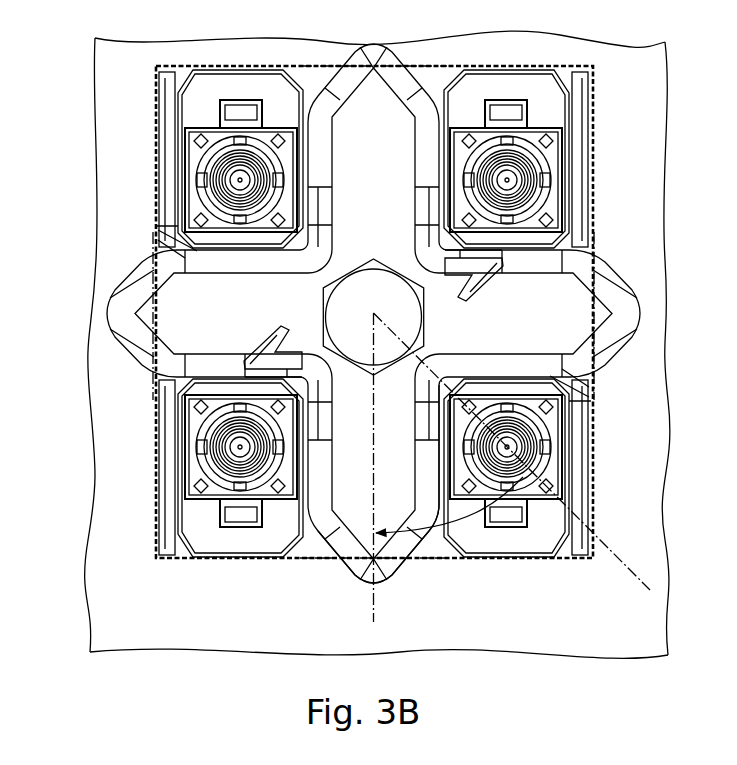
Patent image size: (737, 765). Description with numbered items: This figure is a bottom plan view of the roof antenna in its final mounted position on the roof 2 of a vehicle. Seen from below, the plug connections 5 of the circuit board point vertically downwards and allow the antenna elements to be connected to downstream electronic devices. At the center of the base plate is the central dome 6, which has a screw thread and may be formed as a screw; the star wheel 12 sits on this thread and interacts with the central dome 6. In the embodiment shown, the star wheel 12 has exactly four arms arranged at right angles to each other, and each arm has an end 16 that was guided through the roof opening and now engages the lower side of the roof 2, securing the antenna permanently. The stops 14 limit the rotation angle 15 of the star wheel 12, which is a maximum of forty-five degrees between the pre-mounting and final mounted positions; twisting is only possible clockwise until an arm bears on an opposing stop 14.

The roof 2 is at (82, 537).
The plug connection 5 is at (187, 455).
The central dome 6 is at (345, 322).
The star wheel 12 is at (203, 258).
The stop 14 is at (505, 266).
The rotation angle 15 is at (437, 546).
The end 16 is at (356, 579).